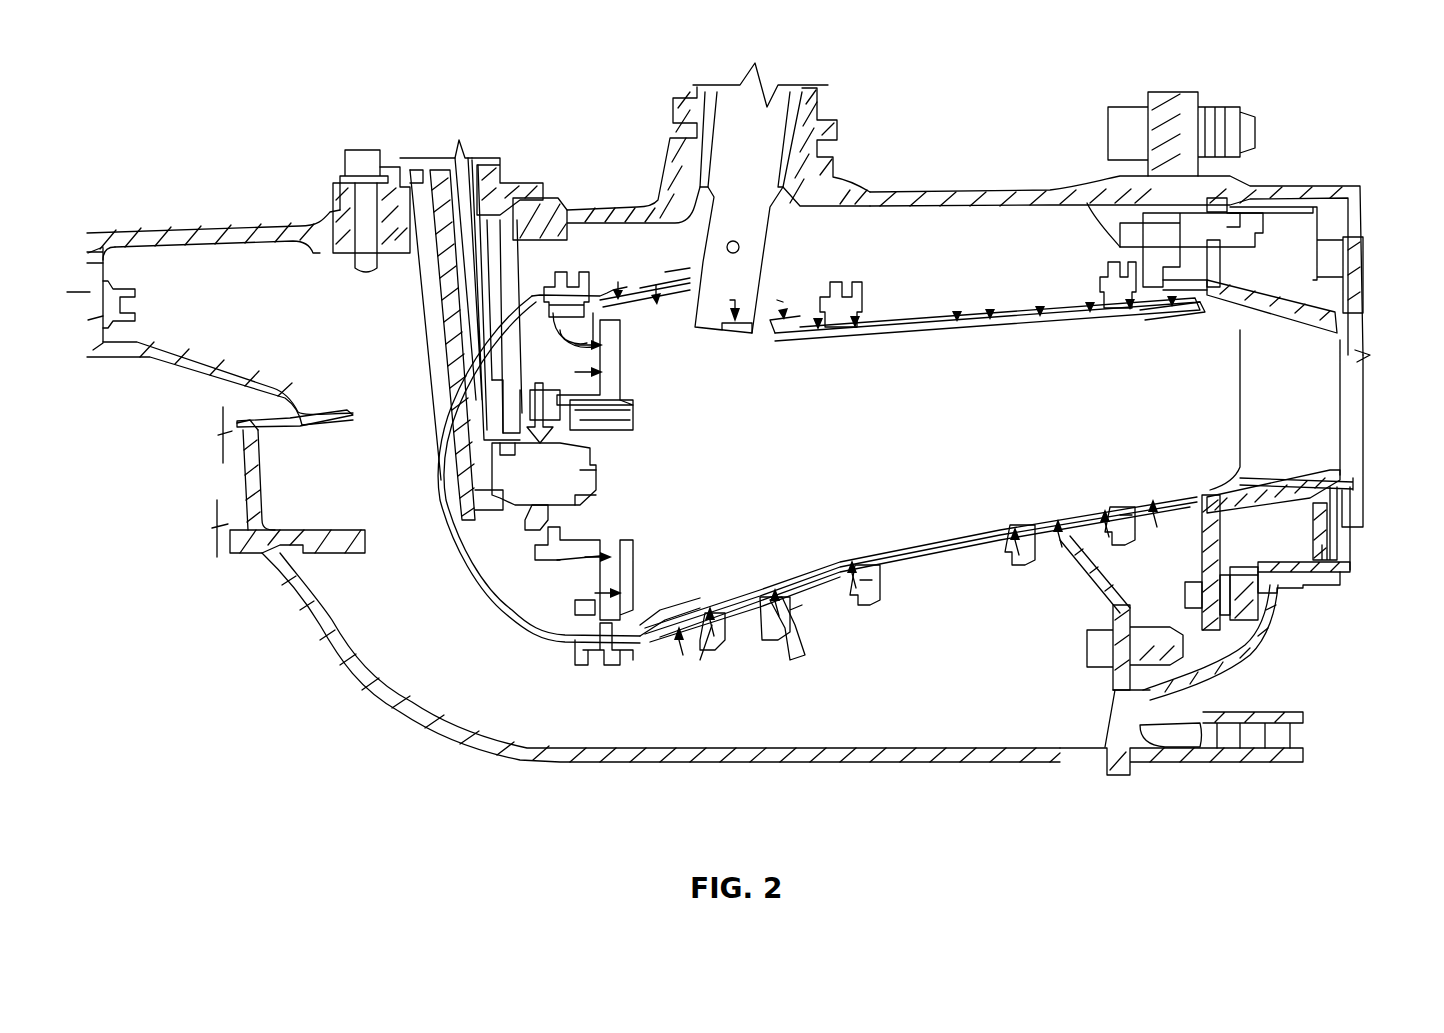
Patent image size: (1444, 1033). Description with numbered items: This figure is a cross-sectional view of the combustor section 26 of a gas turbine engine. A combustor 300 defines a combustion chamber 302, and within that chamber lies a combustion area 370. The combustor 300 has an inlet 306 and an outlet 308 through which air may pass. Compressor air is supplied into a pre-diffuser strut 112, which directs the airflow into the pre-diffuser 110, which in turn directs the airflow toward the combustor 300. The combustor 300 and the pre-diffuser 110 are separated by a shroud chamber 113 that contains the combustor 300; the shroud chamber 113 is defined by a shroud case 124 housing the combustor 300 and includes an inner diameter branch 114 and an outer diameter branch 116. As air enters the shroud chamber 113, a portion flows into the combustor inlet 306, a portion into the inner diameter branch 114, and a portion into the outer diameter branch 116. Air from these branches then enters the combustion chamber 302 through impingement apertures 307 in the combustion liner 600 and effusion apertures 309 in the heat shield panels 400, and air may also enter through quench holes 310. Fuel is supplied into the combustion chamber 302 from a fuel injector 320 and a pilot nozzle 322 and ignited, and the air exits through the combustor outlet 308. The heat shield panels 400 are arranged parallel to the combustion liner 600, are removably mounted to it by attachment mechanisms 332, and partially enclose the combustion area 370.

The combustor section 26 is at (984, 55).
The pre-diffuser 110 is at (317, 440).
The pre-diffuser strut 112 is at (243, 487).
The shroud chamber 113 is at (419, 623).
The inner diameter branch 114 is at (1068, 618).
The outer diameter branch 116 is at (828, 258).
The shroud case 124 is at (840, 193).
The combustor 300 is at (957, 300).
The combustion chamber 302 is at (853, 468).
The inlet 306 is at (648, 462).
The impingement apertures 307 is at (1133, 298).
The outlet 308 is at (1358, 407).
The effusion apertures 309 is at (1123, 307).
The quench holes 310 is at (923, 328).
The fuel injector 320 is at (490, 192).
The pilot nozzle 322 is at (612, 460).
The attachment mechanism 332 is at (807, 623).
The combustion area 370 is at (776, 428).
The heat shield panels 400 is at (636, 310).
The combustion liner 600 is at (590, 372).